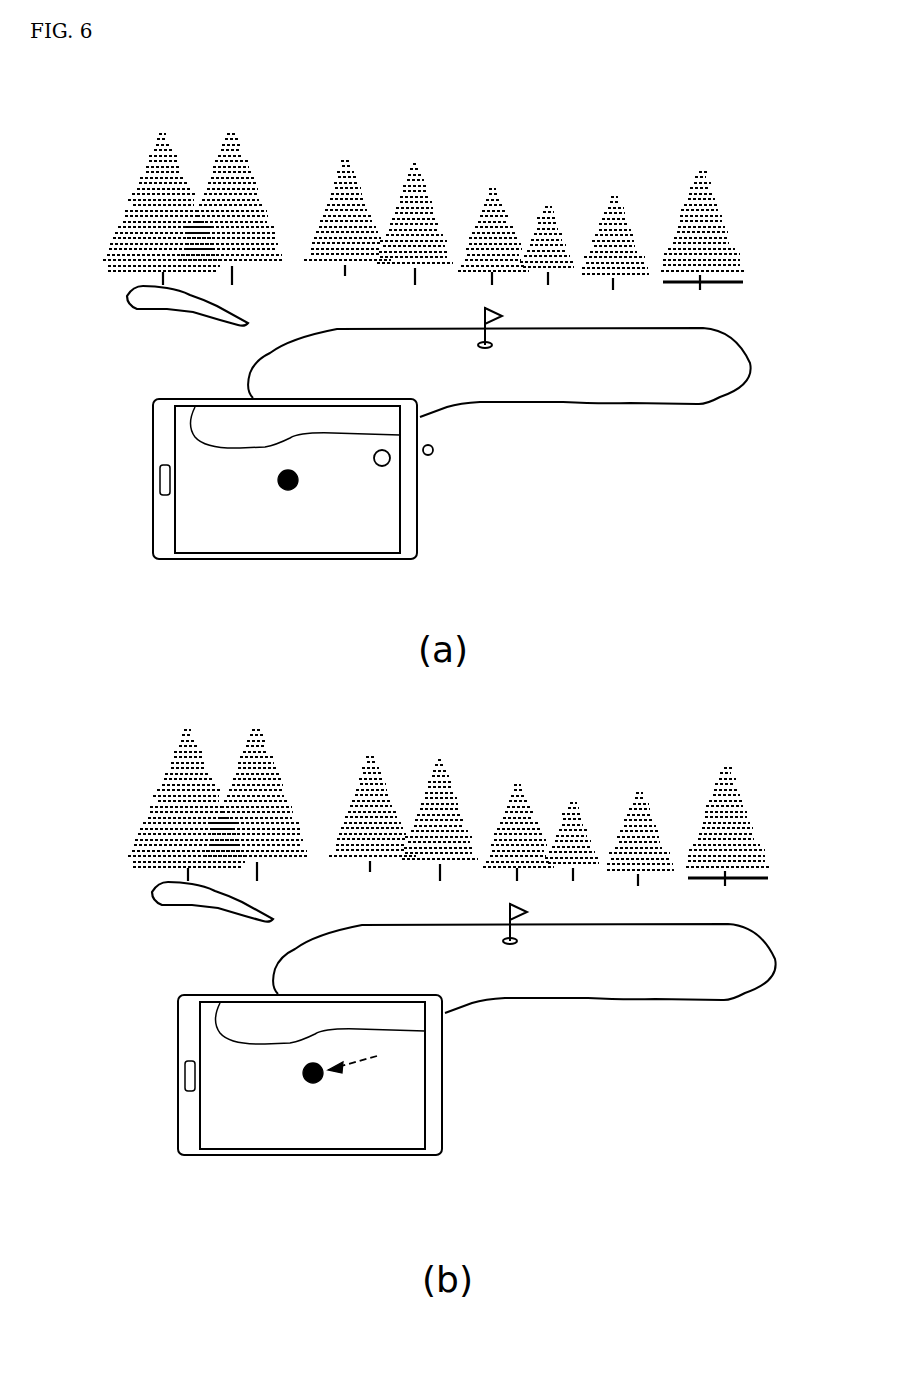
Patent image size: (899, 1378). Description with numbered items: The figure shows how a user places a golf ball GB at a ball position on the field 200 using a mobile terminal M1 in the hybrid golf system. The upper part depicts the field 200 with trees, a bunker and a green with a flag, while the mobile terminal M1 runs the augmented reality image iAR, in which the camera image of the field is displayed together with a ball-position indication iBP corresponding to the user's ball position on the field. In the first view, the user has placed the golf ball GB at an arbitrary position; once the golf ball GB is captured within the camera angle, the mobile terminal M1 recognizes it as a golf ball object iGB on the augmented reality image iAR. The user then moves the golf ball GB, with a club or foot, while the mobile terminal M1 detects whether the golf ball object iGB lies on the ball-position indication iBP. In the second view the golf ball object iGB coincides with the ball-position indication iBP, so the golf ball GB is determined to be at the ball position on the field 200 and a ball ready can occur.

The field 200 is at (196, 359).
The mobile terminal M1 is at (153, 434).
The augmented reality image iAR is at (382, 517).
The ball-position indication iBP is at (278, 481).
The golf ball object iGB is at (387, 465).
The golf ball GB is at (433, 448).